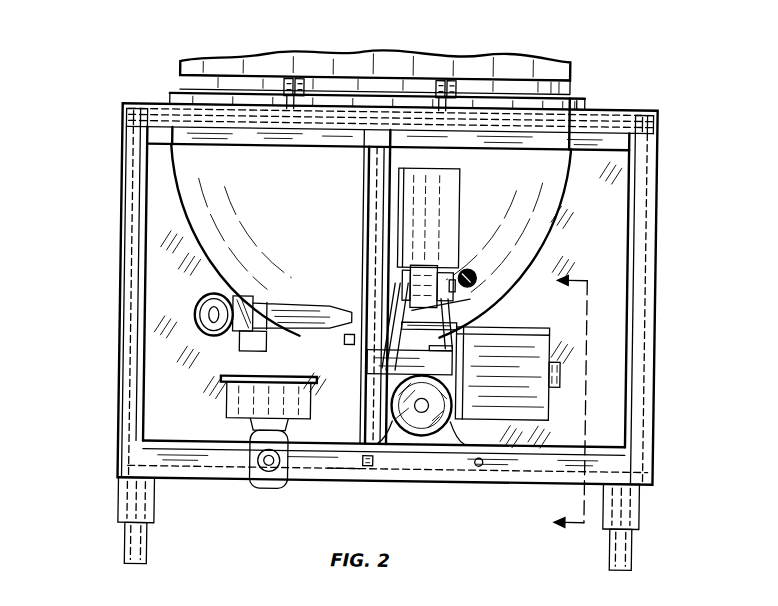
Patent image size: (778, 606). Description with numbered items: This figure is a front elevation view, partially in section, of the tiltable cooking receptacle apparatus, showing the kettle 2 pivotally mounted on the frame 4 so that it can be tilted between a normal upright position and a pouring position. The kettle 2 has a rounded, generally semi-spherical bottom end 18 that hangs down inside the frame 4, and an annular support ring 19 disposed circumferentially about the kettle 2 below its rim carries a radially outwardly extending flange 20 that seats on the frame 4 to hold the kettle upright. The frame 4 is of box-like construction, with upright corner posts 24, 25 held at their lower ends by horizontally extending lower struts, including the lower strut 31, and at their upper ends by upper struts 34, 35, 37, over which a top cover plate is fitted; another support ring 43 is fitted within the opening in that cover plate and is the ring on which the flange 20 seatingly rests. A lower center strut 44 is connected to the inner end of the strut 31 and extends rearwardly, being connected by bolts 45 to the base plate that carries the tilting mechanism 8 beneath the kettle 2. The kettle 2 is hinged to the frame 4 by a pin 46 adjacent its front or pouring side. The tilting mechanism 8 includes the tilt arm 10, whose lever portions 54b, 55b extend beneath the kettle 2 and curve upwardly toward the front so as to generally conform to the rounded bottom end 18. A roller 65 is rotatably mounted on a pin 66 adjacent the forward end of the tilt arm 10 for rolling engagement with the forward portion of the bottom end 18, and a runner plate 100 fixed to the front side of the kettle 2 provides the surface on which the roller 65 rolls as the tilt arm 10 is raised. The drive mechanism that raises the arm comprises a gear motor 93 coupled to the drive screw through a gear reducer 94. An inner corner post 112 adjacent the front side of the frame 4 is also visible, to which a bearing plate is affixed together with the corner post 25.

The kettle 2 is at (170, 178).
The frame 4 is at (655, 315).
The tilting mechanism 8 is at (561, 401).
The tilt arm 10 is at (403, 273).
The bottom end 18 is at (535, 180).
The support ring 19 is at (534, 92).
The flange 20 is at (564, 102).
The corner post 24 is at (133, 251).
The corner post 25 is at (636, 240).
The lower strut 31 is at (449, 460).
The upper strut 34 is at (246, 135).
The upper strut 35 is at (654, 126).
The upper strut 37 is at (114, 139).
The support ring 43 is at (169, 106).
The lower center strut 44 is at (360, 483).
The bolts 45 is at (355, 466).
The pin 46 is at (442, 88).
The lever portion 54b is at (400, 305).
The lever portion 55b is at (487, 306).
The roller 65 is at (437, 265).
The pin 66 is at (446, 246).
The gear motor 93 is at (508, 398).
The gear reducer 94 is at (427, 420).
The runner plate 100 is at (397, 193).
The inner corner post 112 is at (371, 372).